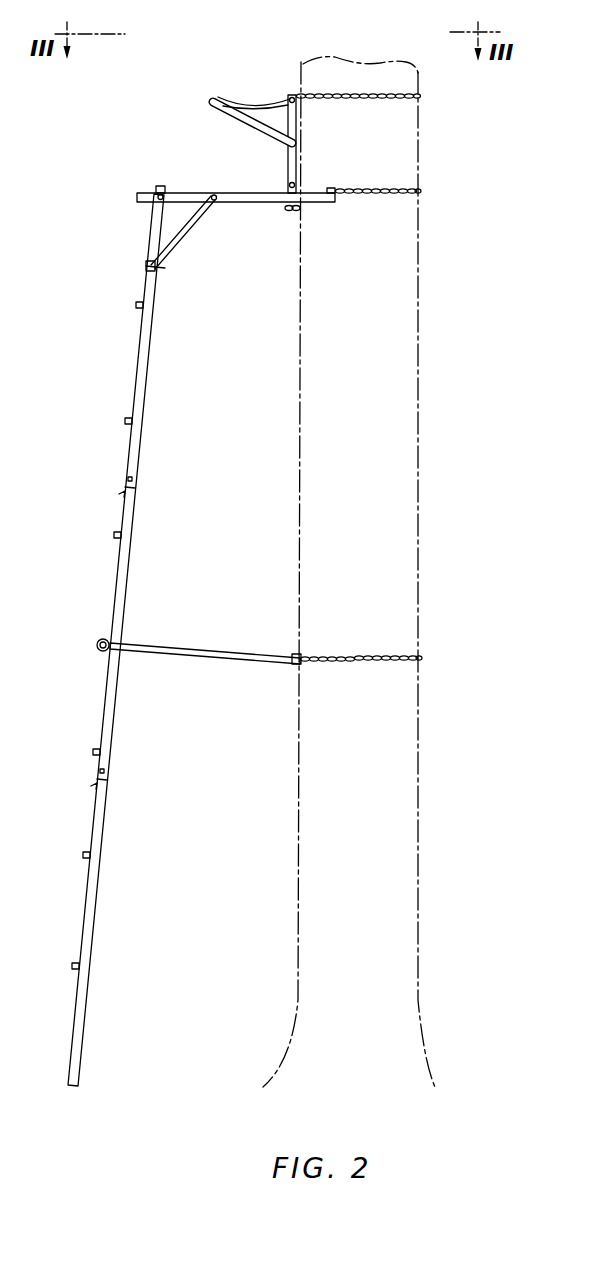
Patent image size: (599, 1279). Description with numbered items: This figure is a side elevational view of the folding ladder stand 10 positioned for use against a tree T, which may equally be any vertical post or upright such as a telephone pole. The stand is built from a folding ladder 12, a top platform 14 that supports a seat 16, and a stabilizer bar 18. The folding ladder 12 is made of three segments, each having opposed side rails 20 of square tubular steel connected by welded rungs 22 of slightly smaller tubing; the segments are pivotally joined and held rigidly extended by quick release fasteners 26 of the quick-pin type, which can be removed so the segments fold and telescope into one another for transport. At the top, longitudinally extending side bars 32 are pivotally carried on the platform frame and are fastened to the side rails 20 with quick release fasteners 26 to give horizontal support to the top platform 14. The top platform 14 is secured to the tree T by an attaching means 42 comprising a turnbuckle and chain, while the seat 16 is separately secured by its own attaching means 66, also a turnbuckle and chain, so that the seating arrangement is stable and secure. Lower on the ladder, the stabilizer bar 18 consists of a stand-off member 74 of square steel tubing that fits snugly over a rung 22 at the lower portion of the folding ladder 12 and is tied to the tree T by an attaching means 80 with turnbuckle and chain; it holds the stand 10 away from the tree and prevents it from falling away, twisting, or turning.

The folding ladder stand 10 is at (176, 570).
The folding ladder 12 is at (94, 602).
The top platform 14 is at (199, 176).
The seat 16 is at (239, 81).
The stabilizer bar 18 is at (199, 645).
The side rails 20 is at (145, 290).
The rungs 22 is at (138, 308).
The quick release fasteners 26 is at (146, 266).
The side bars 32 is at (185, 240).
The means for attaching top platform to tree 42 is at (400, 204).
The means for attaching seat to tree 66 is at (388, 107).
The stand-off member 74 is at (205, 666).
The means for attaching stabilizer bar to tree 80 is at (380, 665).
The tree T is at (413, 80).